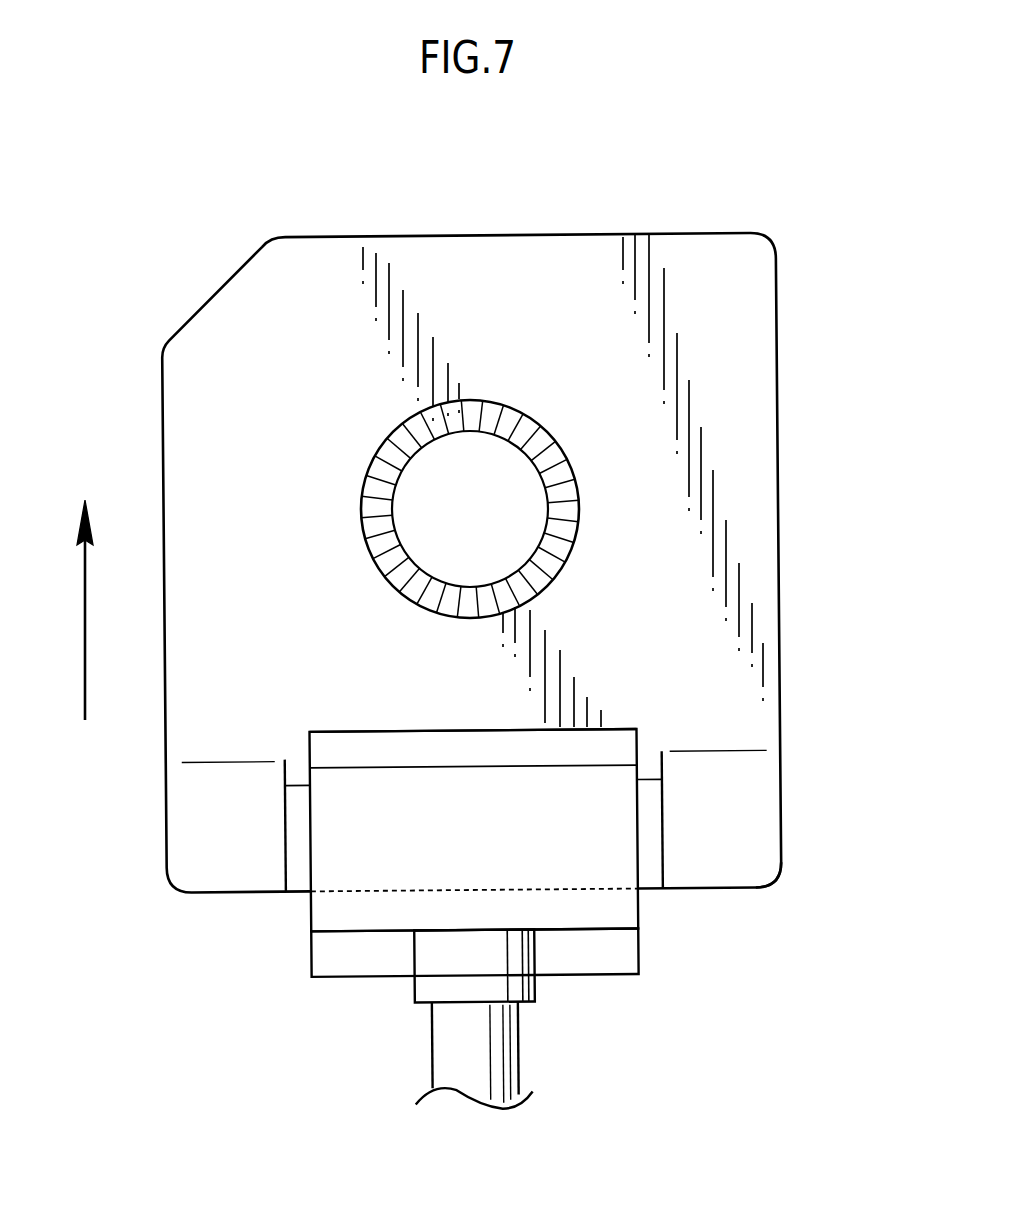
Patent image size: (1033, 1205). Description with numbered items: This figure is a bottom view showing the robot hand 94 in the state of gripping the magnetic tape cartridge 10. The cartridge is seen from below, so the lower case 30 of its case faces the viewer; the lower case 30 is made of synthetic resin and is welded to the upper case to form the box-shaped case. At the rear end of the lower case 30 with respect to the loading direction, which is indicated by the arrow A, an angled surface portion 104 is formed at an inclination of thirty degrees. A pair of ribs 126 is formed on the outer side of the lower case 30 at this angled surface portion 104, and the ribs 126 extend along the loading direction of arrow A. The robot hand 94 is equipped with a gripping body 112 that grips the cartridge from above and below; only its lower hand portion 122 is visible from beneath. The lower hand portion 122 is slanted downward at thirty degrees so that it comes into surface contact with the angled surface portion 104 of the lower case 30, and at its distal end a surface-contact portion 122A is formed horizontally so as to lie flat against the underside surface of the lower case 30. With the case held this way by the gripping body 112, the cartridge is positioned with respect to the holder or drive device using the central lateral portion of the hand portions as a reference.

The magnetic tape cartridge 10 is at (808, 478).
The lower case 30 is at (758, 683).
The robot hand 94 is at (597, 1075).
The angled surface portion 104 is at (757, 846).
The gripping body 112 is at (639, 955).
The lower hand portion 122 is at (530, 787).
The surface-contact portion 122A is at (420, 742).
The ribs 126 is at (283, 852).
The arrow A is at (82, 633).